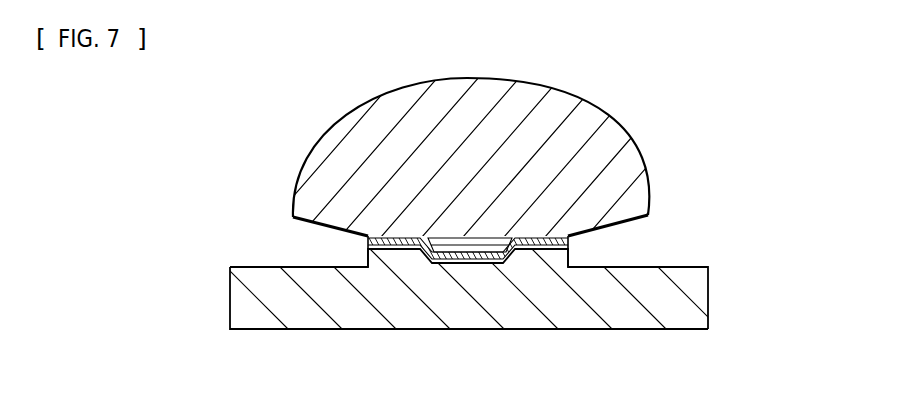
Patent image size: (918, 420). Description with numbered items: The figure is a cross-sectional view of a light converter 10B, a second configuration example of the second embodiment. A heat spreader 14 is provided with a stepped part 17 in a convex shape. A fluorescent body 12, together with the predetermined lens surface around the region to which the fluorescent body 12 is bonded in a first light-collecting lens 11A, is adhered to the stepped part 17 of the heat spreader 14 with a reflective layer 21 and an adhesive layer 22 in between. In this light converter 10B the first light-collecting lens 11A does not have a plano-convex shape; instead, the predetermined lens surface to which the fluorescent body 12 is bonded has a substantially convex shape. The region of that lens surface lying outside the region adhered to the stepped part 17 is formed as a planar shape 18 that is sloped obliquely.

The light converter 10B is at (733, 121).
The first light-collecting lens 11A is at (598, 142).
The fluorescent body 12 is at (459, 330).
The heat spreader 14 is at (708, 300).
The stepped part 17 is at (366, 260).
The planar shape 18 is at (304, 226).
The reflective layer 21 is at (578, 224).
The adhesive layer 22 is at (570, 245).